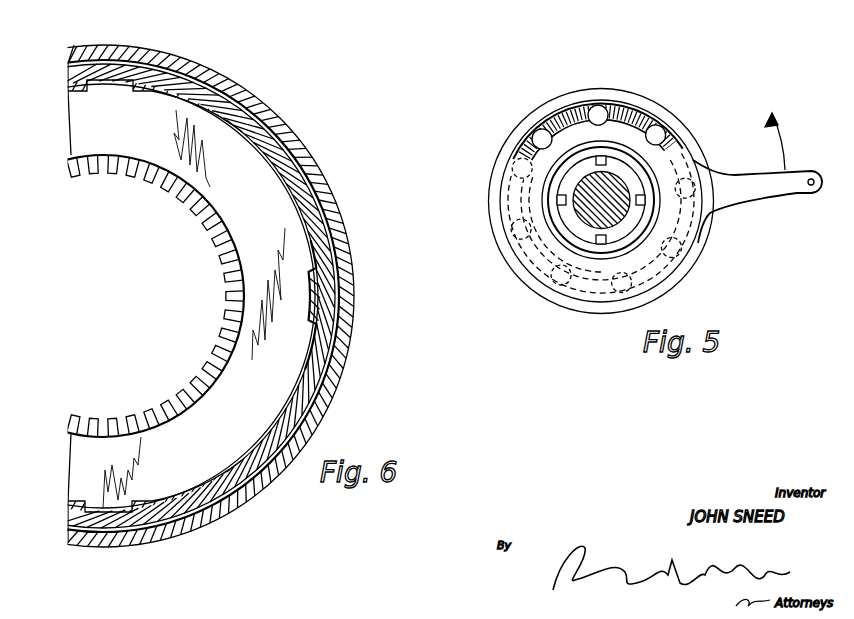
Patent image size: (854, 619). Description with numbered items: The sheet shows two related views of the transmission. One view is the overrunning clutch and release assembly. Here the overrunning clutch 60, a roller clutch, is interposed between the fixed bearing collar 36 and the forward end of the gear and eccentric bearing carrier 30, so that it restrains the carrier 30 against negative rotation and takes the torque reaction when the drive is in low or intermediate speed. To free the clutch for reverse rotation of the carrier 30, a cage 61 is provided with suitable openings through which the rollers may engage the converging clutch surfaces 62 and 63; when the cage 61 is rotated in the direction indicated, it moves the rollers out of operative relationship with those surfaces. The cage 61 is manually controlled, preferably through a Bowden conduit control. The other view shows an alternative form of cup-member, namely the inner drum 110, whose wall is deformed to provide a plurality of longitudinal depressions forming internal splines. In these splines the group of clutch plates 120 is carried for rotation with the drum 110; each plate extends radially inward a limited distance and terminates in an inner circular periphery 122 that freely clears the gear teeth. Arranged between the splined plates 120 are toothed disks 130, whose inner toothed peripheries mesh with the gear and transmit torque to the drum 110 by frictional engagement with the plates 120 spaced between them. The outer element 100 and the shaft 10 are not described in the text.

In FIG. 5, the shaft 10 is at (584, 216).
In FIG. 5, the gear and eccentric bearing carrier 30 is at (537, 170).
In FIG. 5, the fixed bearing collar 36 is at (598, 92).
In FIG. 5, the overrunning clutch 60 is at (626, 97).
In FIG. 5, the cage 61 is at (682, 140).
In FIG. 5, the converging clutch surface 62 is at (604, 106).
In FIG. 5, the converging clutch surface 63 is at (668, 130).
In FIG. 6, the outer ring 100 is at (328, 197).
In FIG. 6, the inner drum 110 is at (312, 355).
In FIG. 6, the group of clutch plates 120 is at (210, 447).
In FIG. 6, the inner circular periphery 122 is at (231, 245).
In FIG. 6, the toothed disks 130 is at (118, 428).